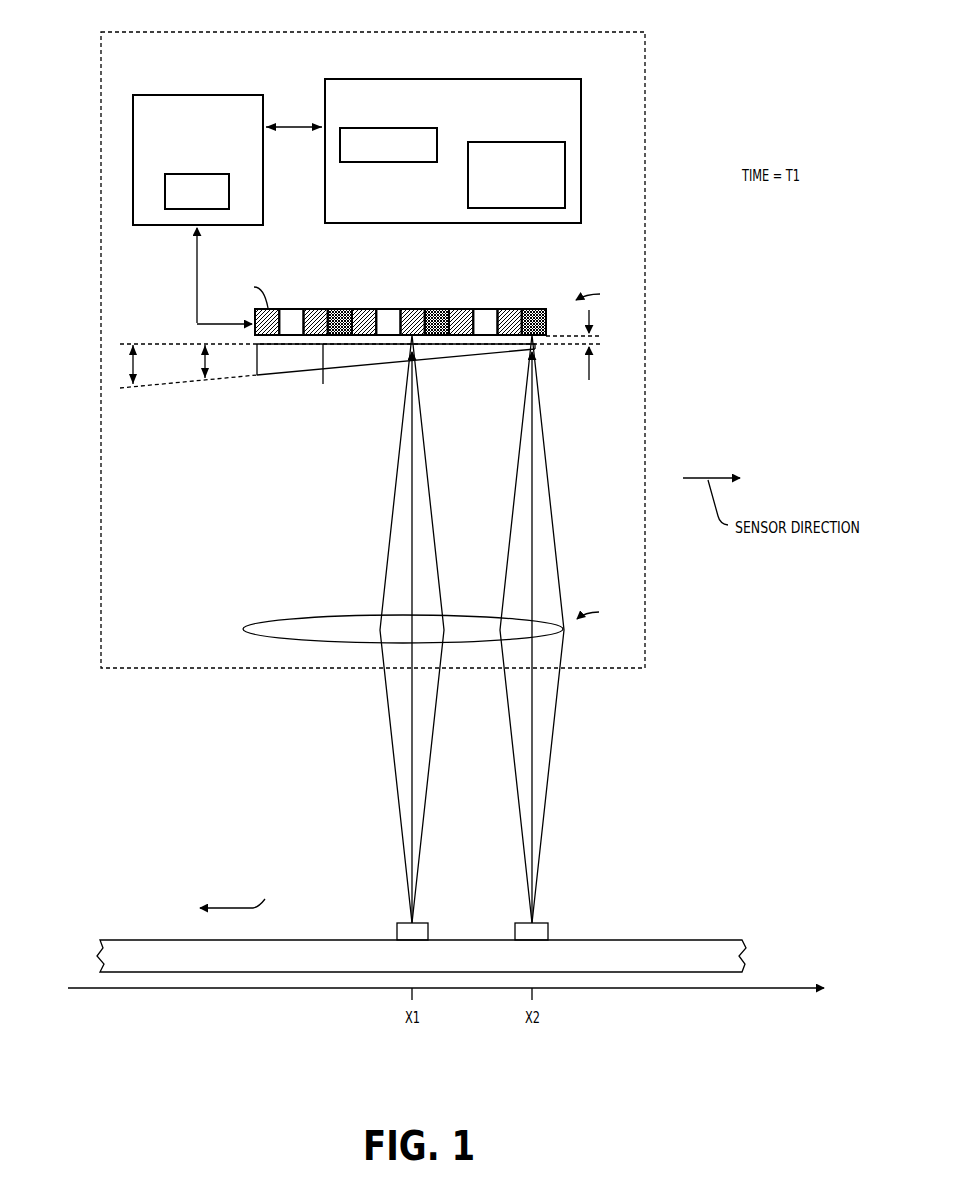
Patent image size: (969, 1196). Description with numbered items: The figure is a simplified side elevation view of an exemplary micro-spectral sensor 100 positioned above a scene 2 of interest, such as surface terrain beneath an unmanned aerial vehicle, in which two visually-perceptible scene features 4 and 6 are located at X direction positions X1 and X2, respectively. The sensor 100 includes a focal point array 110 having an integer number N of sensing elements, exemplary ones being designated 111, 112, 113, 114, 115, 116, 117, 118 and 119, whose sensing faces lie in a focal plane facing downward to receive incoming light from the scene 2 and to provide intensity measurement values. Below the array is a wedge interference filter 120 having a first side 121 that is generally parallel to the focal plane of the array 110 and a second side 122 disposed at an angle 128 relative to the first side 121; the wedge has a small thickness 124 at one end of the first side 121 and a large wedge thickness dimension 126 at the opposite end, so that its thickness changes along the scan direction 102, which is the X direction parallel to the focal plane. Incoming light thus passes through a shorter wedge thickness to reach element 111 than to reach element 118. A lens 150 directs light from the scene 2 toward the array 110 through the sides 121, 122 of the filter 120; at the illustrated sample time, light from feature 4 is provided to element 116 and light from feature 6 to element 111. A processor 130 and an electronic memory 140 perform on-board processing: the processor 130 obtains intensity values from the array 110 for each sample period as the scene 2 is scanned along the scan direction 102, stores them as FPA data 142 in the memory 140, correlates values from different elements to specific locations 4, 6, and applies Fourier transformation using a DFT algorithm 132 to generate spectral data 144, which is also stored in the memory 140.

The micro-spectral sensor 100 is at (192, 32).
The processor 130 is at (192, 94).
The DFT algorithm 132 is at (192, 173).
The electronic memory 140 is at (452, 78).
The FPA data 142 is at (388, 128).
The spectral data 144 is at (519, 142).
The focal point array 110 is at (281, 289).
The sensing element 111 is at (533, 308).
The sensing element 112 is at (508, 308).
The sensing element 113 is at (484, 308).
The sensing element 114 is at (460, 308).
The sensing element 115 is at (433, 308).
The sensing element 116 is at (410, 308).
The sensing element 117 is at (386, 308).
The sensing element 118 is at (362, 308).
The sensing element 119 is at (338, 308).
The wedge interference filter 120 is at (327, 383).
The first side 121 is at (323, 384).
The second side 122 is at (340, 368).
The small thickness 124 is at (587, 370).
The large wedge thickness dimension 126 is at (207, 362).
The angle 128 is at (136, 362).
The lens 150 is at (247, 630).
The scan direction 102 is at (245, 900).
The scene 2 is at (100, 952).
The scene feature 4 is at (400, 925).
The scene feature 6 is at (518, 925).